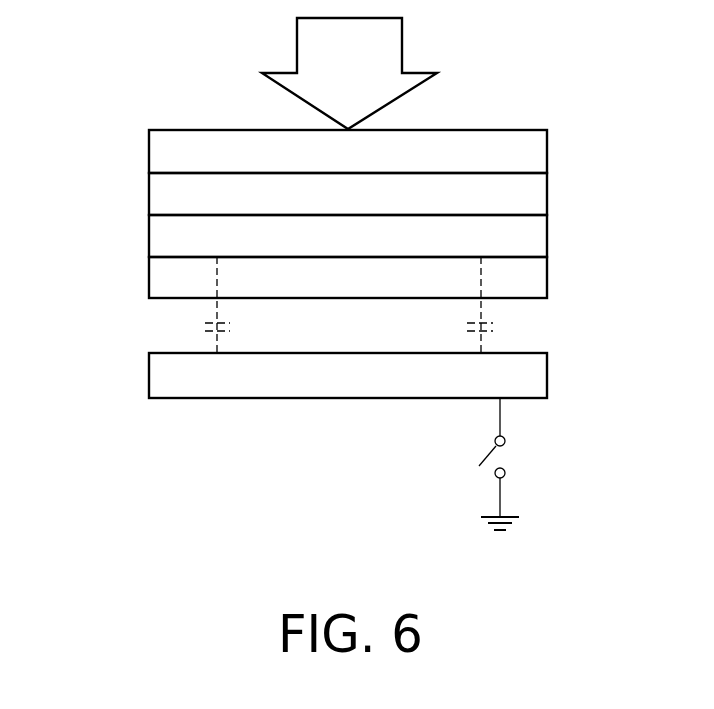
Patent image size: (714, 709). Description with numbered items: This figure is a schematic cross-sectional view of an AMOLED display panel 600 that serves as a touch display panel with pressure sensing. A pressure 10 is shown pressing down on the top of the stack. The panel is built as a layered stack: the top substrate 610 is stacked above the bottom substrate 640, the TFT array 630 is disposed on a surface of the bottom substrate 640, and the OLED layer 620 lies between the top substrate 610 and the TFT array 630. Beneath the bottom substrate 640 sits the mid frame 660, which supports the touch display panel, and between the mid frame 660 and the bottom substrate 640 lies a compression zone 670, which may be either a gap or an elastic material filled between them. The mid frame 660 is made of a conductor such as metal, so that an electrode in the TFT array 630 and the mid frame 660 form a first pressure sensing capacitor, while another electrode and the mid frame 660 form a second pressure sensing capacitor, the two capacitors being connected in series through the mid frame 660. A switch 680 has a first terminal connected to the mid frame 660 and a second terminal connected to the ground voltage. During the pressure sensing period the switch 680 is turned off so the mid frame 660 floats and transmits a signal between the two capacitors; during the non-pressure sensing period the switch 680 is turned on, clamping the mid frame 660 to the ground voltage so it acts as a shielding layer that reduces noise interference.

The pressure (external force) 10 is at (403, 43).
The AMOLED display panel 600 is at (140, 456).
The top substrate 610 is at (549, 152).
The OLED layer 620 is at (549, 195).
The TFT array 630 is at (549, 237).
The bottom substrate 640 is at (549, 278).
The mid frame 660 is at (549, 376).
The compression zone 670 is at (552, 298).
The switch 680 is at (511, 460).